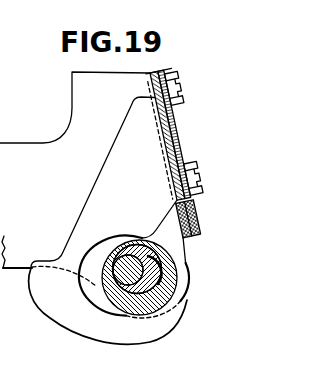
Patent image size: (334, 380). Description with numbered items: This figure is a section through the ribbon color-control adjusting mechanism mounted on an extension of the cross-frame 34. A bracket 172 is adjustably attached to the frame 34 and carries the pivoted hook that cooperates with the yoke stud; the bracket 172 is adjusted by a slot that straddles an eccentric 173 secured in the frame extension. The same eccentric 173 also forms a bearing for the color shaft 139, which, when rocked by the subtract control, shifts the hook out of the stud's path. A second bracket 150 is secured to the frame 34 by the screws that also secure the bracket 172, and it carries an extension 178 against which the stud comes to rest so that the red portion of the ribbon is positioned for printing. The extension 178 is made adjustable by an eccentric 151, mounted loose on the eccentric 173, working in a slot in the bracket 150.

The cross-frame 34 is at (80, 95).
The bracket 150 is at (108, 161).
The bracket 172 is at (172, 121).
The shaft 139 is at (165, 260).
The eccentric 173 is at (180, 282).
The eccentric 151 is at (177, 303).
The extension 178 is at (38, 246).